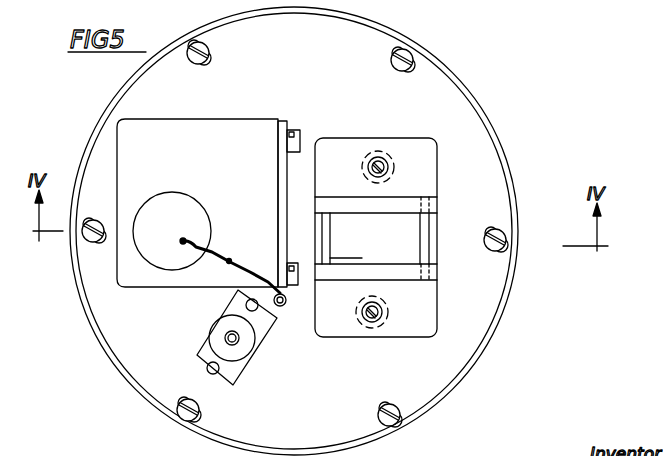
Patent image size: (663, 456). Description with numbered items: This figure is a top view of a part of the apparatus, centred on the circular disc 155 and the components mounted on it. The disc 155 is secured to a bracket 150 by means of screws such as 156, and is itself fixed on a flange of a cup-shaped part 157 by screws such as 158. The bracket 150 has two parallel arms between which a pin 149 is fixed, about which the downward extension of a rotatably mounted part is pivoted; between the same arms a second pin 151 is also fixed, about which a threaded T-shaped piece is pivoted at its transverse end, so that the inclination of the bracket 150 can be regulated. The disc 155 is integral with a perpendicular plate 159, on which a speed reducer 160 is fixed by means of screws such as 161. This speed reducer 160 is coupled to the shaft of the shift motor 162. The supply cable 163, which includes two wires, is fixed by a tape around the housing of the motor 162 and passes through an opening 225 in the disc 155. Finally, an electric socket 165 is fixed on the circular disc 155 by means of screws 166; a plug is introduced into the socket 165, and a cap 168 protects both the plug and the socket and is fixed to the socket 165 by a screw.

The pin 149 is at (365, 255).
The bracket 150 is at (357, 175).
The pin 151 is at (418, 233).
The circular disc 155 is at (432, 93).
The screws 156 is at (385, 311).
The cup-shaped part 157 is at (496, 132).
The screws 158 is at (501, 243).
The perpendicular plate 159 is at (287, 124).
The speed reducer 160 is at (197, 157).
The screws 161 is at (302, 134).
The shift motor 162 is at (196, 199).
The supply cable 163 is at (220, 255).
The electric socket 165 is at (243, 371).
The screws 166 is at (207, 367).
The cap 168 is at (218, 334).
The opening 225 is at (284, 305).